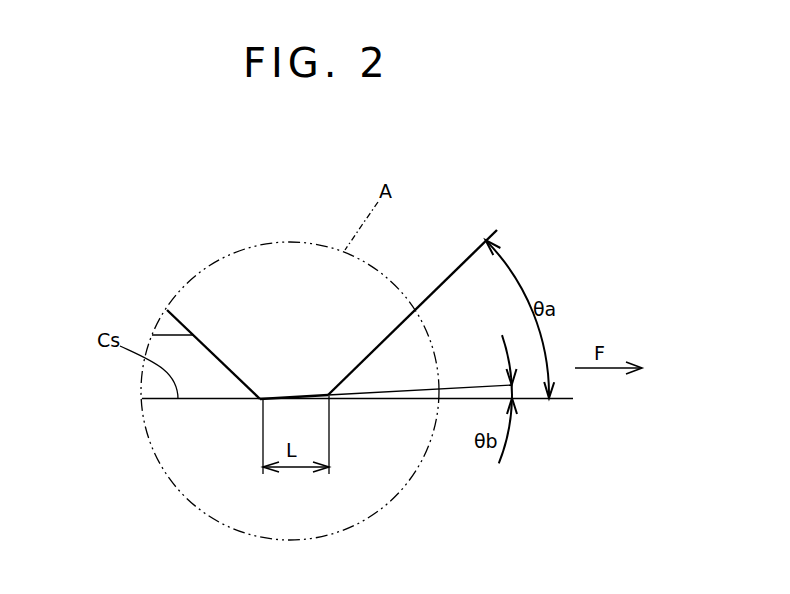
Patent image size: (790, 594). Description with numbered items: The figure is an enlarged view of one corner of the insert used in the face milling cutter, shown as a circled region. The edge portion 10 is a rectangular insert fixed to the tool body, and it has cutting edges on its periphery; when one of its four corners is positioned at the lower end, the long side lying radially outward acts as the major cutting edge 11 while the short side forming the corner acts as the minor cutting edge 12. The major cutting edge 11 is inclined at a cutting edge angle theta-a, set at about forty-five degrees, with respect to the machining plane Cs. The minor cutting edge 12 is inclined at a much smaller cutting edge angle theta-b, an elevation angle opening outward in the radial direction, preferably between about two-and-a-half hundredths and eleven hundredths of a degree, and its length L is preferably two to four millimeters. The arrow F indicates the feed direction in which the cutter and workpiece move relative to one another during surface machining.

The edge portion 10 is at (257, 252).
The major cutting edge 11 is at (385, 348).
The minor cutting edge 12 is at (298, 399).